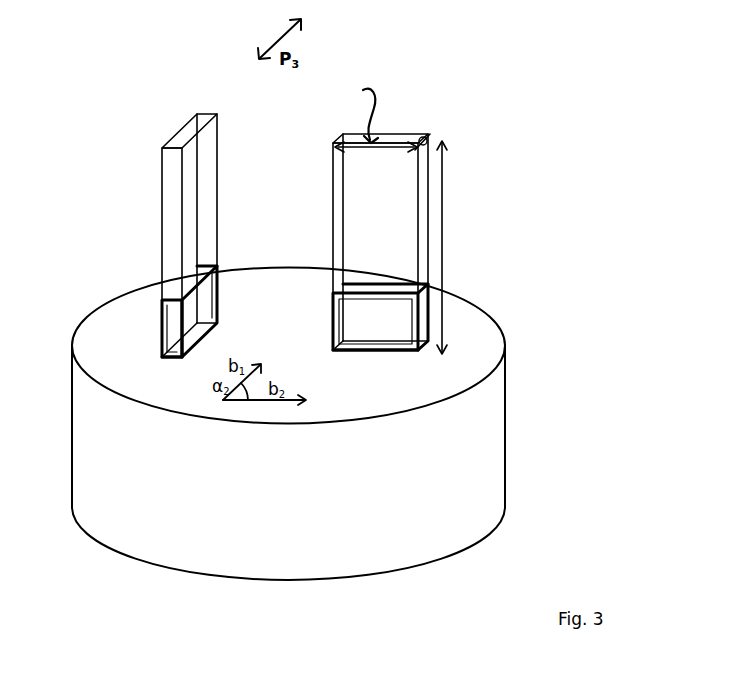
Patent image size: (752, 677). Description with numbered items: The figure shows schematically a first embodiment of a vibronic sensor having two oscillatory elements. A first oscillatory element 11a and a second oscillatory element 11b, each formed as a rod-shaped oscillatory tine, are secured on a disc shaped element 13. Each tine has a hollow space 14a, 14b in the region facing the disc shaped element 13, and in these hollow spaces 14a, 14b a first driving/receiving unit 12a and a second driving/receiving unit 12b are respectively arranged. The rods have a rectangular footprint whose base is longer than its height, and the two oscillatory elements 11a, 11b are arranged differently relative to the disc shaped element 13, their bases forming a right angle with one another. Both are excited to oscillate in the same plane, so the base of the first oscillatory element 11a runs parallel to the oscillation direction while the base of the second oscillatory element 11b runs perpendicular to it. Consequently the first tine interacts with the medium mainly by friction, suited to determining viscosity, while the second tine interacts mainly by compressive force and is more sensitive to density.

The first oscillatory element 11a is at (148, 187).
The second oscillatory element 11b is at (322, 136).
The first driving/receiving unit 12a is at (166, 300).
The second driving/receiving unit 12b is at (350, 304).
The disc shaped element 13 is at (86, 495).
The hollow space 14a is at (158, 336).
The hollow space 14b is at (380, 366).